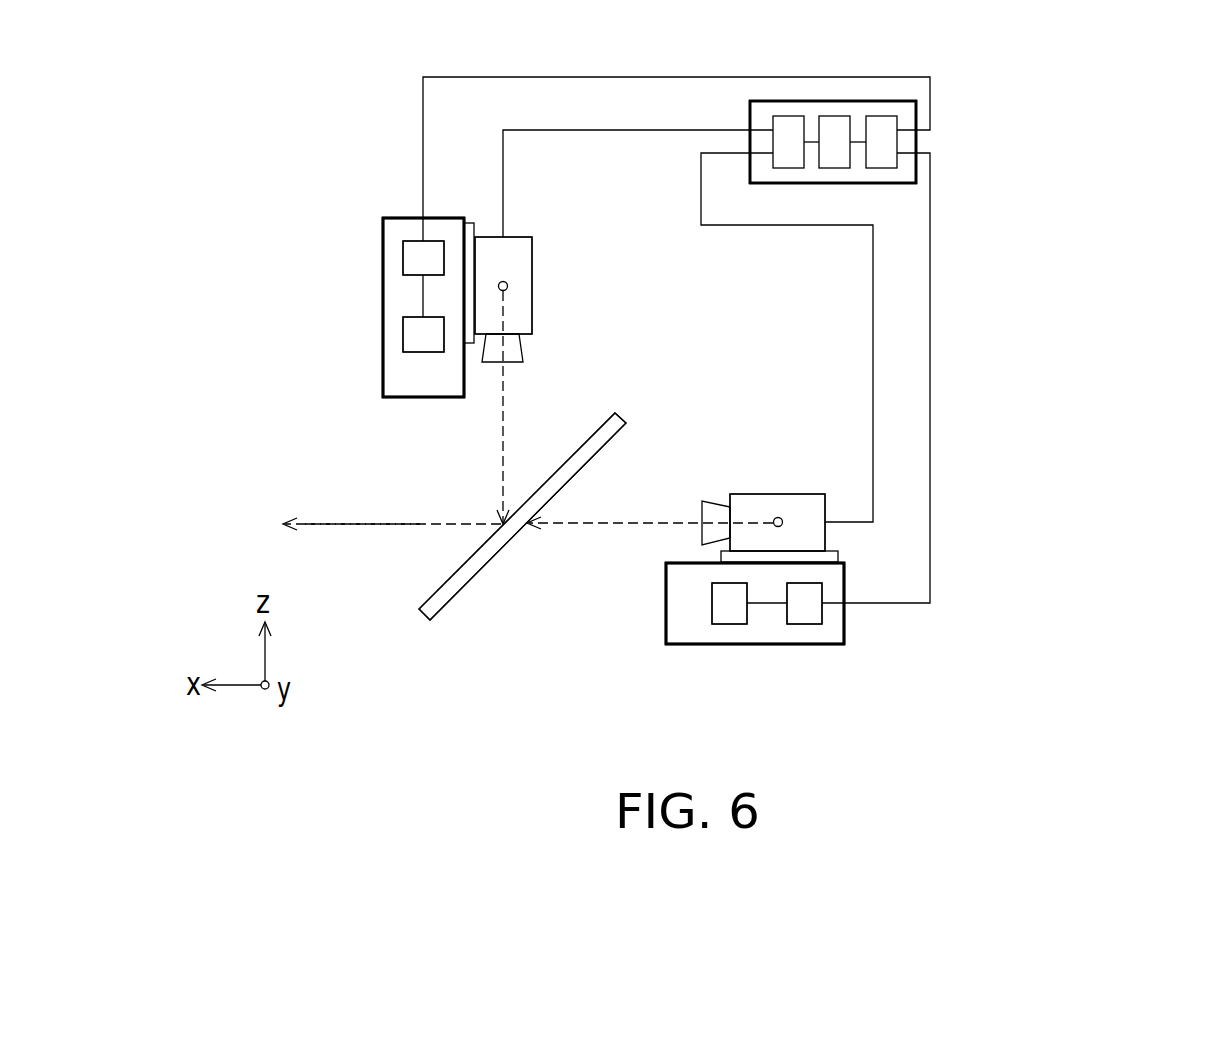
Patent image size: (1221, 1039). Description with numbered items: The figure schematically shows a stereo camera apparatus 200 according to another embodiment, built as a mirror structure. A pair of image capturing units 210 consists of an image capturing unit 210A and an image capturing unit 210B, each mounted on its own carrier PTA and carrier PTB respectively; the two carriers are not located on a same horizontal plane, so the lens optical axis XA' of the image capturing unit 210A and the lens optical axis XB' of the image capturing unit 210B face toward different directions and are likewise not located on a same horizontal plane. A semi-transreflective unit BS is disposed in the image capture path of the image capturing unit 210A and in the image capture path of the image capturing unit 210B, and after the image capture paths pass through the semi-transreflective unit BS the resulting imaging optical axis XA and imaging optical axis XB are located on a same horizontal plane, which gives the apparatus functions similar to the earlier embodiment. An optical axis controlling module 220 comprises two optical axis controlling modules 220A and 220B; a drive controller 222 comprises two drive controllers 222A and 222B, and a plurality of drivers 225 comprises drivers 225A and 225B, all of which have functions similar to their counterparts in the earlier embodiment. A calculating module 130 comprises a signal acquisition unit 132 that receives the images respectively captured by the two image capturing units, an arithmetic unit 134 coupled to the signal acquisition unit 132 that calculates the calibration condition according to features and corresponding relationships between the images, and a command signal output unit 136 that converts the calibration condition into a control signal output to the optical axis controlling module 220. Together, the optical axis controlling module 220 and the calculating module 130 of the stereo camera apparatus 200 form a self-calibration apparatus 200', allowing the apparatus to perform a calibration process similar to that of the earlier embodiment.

The stereo camera apparatus 200 is at (722, 373).
The self-calibration apparatus 200' is at (788, 363).
The calculating module 130 is at (758, 117).
The signal acquisition unit 132 is at (798, 123).
The arithmetic unit 134 is at (847, 123).
The command signal output unit 136 is at (893, 123).
The image capturing units 210 is at (1143, 173).
The image capturing unit 210A is at (797, 517).
The image capturing unit 210B is at (525, 265).
The optical axis controlling module 220 is at (1143, 262).
The optical axis controlling module 220A is at (676, 630).
The optical axis controlling module 220B is at (396, 382).
The drive controller 222 is at (1143, 345).
The drive controller 222A is at (803, 620).
The drive controller 222B is at (408, 260).
The drivers 225 is at (1143, 433).
The driver 225A is at (728, 620).
The driver 225B is at (408, 335).
The carrier PTA is at (722, 558).
The carrier PTB is at (468, 337).
The semi-transreflective unit BS is at (432, 610).
The imaging optical axis XA is at (360, 557).
The imaging optical axis XB is at (392, 494).
The lens optical axis XA' is at (650, 493).
The lens optical axis XB' is at (541, 407).